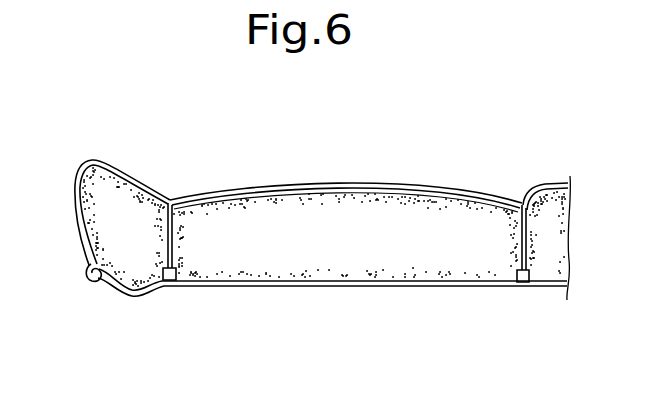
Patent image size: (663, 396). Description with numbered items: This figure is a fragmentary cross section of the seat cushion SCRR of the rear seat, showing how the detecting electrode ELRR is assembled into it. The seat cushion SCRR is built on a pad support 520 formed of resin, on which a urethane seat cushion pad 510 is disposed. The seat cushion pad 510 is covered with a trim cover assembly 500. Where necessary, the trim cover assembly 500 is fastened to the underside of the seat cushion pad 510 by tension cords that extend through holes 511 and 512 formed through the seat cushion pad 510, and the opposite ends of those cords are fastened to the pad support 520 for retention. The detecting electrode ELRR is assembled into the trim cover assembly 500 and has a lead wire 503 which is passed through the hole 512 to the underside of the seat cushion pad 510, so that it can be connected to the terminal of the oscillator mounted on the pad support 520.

The trim cover assembly 500 is at (356, 182).
The seat cushion pad 510 is at (259, 264).
The hole 511 is at (170, 243).
The hole 512 is at (521, 249).
The pad support 520 is at (338, 284).
The lead wire 503 is at (529, 287).
The detecting electrode ELRR is at (237, 195).
The seat cushion SCRR is at (481, 133).